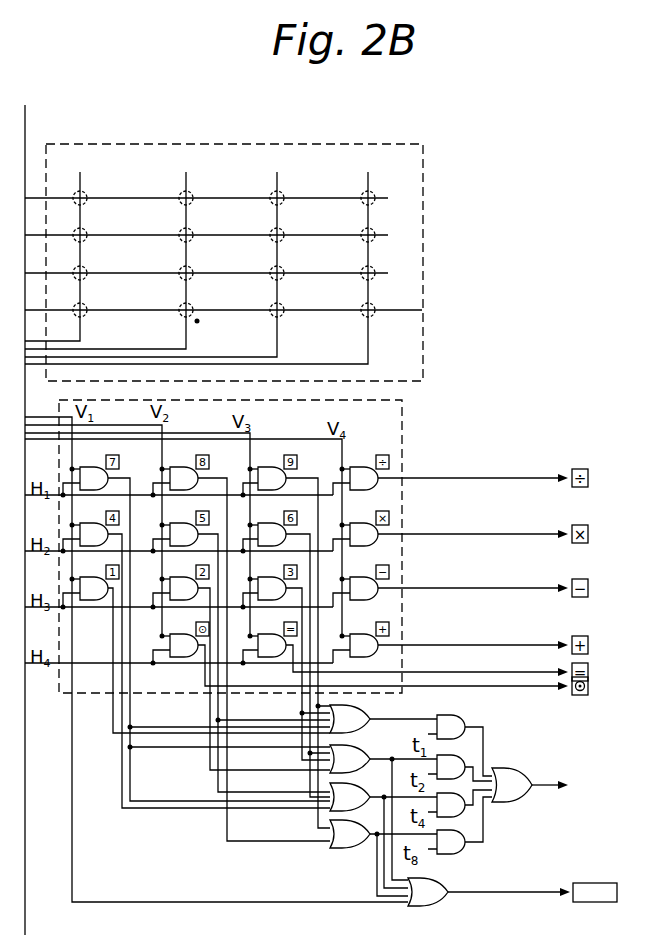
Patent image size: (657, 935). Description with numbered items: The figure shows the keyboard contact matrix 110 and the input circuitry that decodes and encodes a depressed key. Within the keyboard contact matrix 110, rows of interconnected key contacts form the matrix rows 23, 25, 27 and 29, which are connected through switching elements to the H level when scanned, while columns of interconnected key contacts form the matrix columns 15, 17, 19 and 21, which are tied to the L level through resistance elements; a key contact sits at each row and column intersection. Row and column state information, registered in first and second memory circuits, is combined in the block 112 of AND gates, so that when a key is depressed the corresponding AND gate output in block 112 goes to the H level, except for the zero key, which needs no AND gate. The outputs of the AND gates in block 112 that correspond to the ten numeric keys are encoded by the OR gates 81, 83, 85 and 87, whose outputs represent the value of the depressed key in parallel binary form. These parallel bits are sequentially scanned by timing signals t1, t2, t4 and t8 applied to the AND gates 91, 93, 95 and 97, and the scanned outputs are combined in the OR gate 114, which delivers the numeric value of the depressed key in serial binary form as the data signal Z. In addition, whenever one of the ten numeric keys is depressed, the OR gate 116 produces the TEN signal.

The matrix column 15 is at (64, 244).
The matrix column 17 is at (117, 248).
The matrix column 19 is at (163, 252).
The matrix column 21 is at (209, 255).
The matrix row 23 is at (224, 198).
The matrix row 25 is at (224, 235).
The matrix row 27 is at (224, 273).
The matrix row 29 is at (224, 310).
The keyboard contact matrix 110 is at (423, 170).
The block of AND gates 112 is at (402, 415).
The OR gate 81 is at (362, 708).
The OR gate 83 is at (362, 750).
The OR gate 85 is at (336, 810).
The OR gate 87 is at (347, 848).
The AND gate 91 is at (458, 716).
The AND gate 93 is at (471, 757).
The AND gate 95 is at (470, 816).
The AND gate 97 is at (466, 853).
The OR gate 114 is at (521, 776).
The OR gate 116 is at (440, 905).